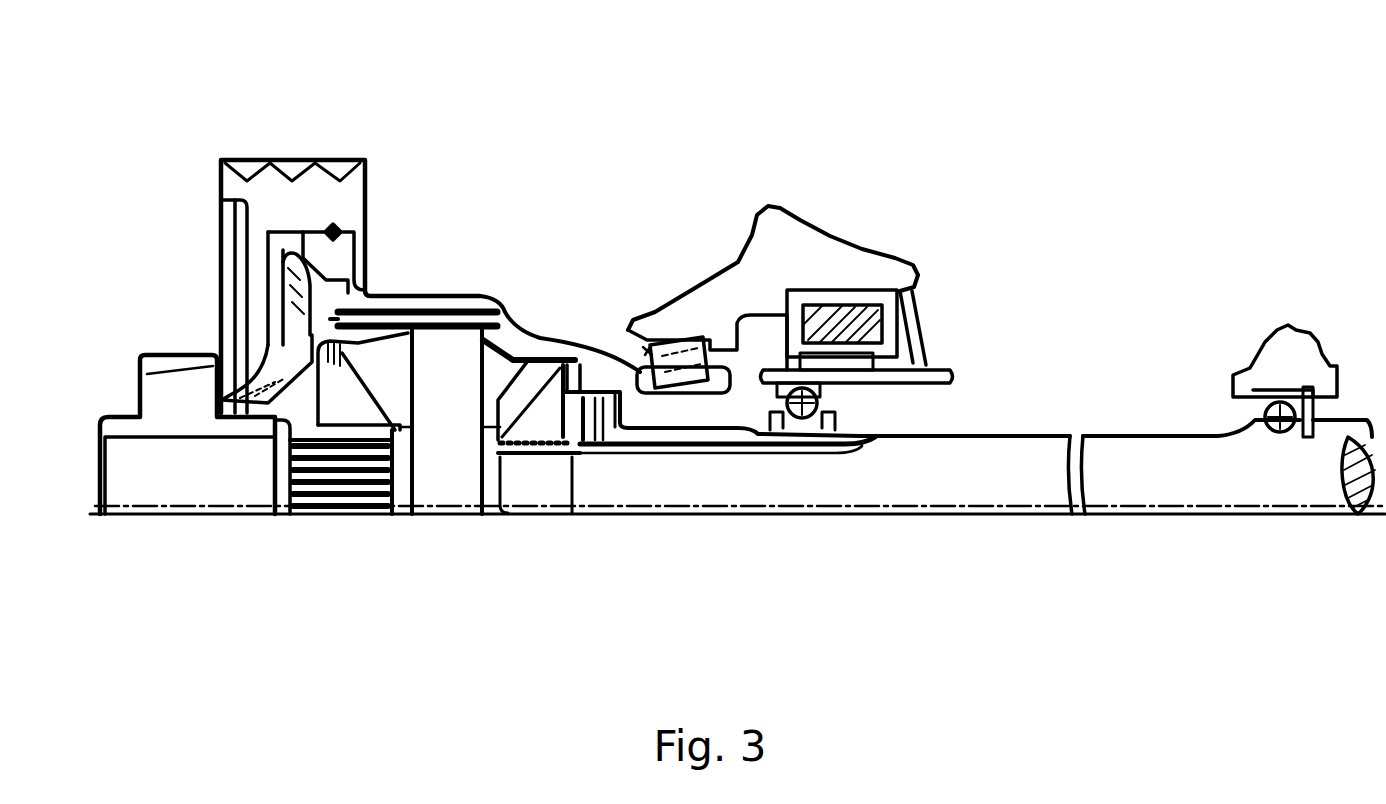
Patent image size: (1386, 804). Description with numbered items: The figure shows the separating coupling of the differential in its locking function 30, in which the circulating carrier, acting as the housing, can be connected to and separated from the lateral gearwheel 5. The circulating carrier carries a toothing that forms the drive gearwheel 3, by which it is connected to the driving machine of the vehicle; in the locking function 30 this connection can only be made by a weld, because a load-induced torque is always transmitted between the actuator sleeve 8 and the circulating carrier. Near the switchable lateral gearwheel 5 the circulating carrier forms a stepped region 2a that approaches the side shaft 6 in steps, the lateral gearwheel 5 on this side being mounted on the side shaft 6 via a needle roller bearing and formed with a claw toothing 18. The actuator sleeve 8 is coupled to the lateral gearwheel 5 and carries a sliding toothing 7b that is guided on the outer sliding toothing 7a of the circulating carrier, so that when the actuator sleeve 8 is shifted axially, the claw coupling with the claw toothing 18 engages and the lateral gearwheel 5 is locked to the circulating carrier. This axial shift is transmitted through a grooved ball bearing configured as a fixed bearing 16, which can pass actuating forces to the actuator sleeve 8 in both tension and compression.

The drive gearwheel 3 is at (315, 193).
The locking function 30 is at (604, 226).
The stepped region 2a is at (595, 370).
The outer sliding toothing 7a is at (700, 427).
The actuator sleeve 8 is at (895, 395).
The lateral gearwheel 5 is at (547, 427).
The claw toothing 18 is at (580, 387).
The sliding toothing 7b is at (673, 437).
The fixed bearing 16 is at (798, 418).
The side shaft 6 is at (973, 487).